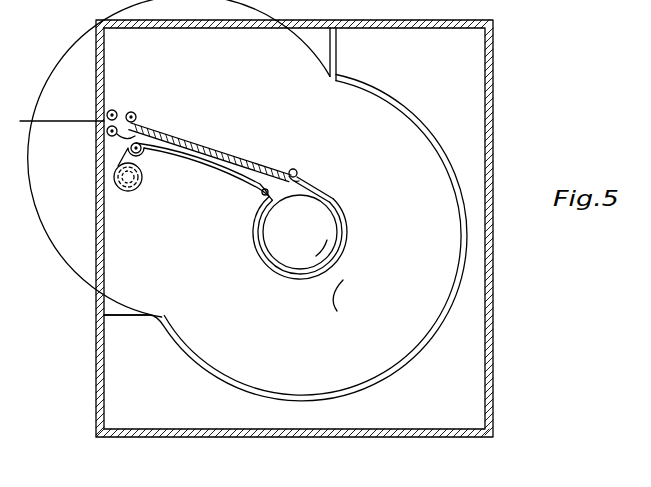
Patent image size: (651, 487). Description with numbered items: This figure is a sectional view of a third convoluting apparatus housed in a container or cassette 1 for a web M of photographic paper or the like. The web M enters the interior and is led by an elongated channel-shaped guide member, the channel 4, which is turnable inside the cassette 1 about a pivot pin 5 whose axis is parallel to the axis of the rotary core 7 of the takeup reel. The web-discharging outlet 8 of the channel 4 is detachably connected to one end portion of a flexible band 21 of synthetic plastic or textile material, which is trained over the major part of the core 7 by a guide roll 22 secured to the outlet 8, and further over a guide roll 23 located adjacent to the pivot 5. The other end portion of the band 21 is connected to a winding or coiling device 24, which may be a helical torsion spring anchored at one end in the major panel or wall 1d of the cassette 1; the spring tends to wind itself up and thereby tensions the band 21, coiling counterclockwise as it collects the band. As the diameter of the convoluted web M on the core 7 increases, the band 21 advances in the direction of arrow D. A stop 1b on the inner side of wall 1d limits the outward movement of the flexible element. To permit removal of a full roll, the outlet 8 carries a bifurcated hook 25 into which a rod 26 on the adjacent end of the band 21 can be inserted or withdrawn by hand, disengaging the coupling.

The cassette 1 is at (508, 329).
The stop 1b is at (449, 391).
The major panel or wall 1d is at (136, 303).
The channel-shaped guide member 4 is at (222, 148).
The pivot pin 5 is at (137, 116).
The rotary core 7 is at (282, 261).
The web-discharging outlet 8 is at (284, 166).
The band 21 is at (348, 232).
The guide roll 22 is at (262, 193).
The guide roll 23 is at (142, 151).
The coiling device 24 is at (128, 192).
The bifurcated hook 25 is at (299, 177).
The rod 26 is at (292, 169).
The direction of band advance D is at (336, 306).
The web M is at (77, 139).